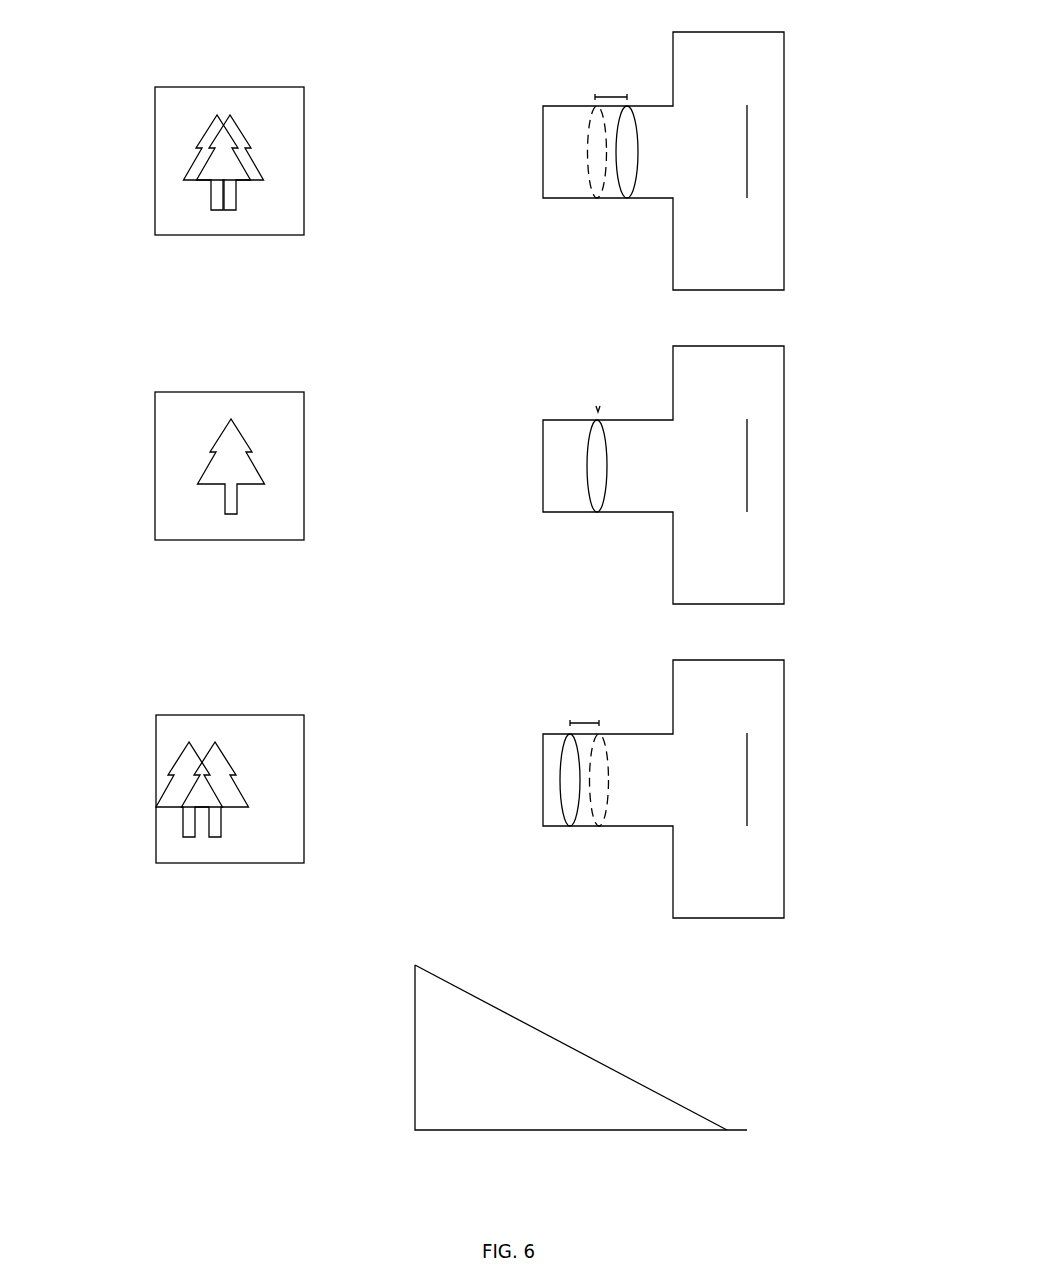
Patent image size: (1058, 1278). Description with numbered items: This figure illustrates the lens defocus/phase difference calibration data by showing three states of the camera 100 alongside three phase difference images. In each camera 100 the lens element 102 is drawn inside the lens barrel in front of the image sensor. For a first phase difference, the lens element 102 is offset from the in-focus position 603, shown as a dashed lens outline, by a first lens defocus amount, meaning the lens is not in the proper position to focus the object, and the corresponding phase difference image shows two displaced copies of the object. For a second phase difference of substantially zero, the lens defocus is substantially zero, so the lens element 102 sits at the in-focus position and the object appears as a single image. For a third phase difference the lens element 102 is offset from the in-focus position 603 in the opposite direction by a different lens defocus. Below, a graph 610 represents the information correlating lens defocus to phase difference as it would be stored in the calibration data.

The camera 100 is at (823, 152).
The lens element 102 is at (627, 197).
The in-focus position 603 is at (593, 197).
The graph 610 is at (758, 1047).